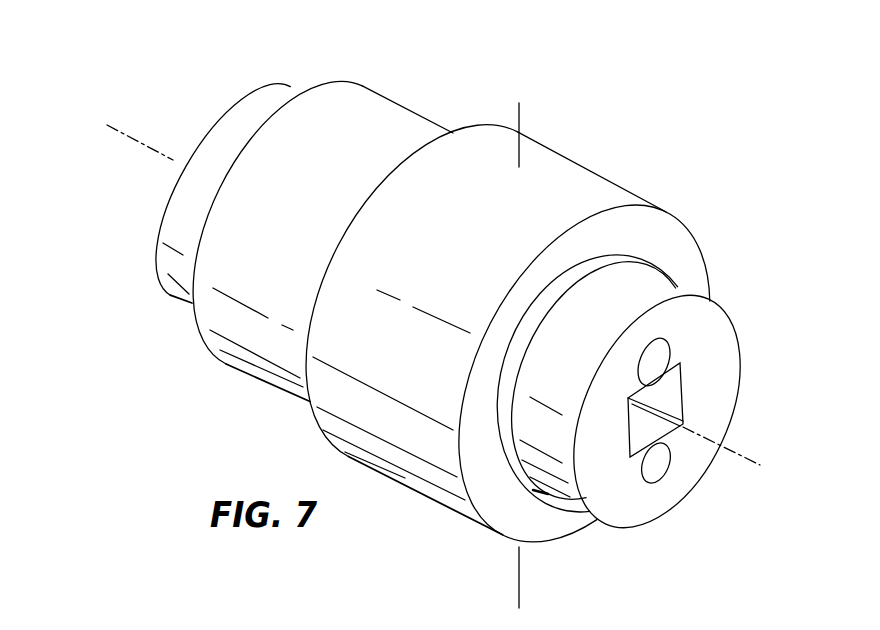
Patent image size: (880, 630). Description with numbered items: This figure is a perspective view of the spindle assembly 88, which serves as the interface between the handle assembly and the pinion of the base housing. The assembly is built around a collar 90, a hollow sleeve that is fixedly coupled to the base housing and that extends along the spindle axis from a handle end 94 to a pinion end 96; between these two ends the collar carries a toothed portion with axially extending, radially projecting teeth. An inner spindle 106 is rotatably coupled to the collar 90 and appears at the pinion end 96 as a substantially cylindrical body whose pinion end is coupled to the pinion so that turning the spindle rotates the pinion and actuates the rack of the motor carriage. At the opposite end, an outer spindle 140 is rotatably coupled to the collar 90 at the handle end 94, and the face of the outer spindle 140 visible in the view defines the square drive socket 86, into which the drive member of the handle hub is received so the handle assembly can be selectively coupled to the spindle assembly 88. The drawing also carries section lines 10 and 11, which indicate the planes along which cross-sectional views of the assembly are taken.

The spindle assembly 88 is at (700, 100).
The inner spindle 106 is at (257, 112).
The pinion end 96 is at (327, 82).
The collar 90 is at (621, 177).
The handle end 94 is at (650, 226).
The outer spindle 140 is at (681, 285).
The square drive socket 86 is at (674, 388).
The section line 10 is at (524, 124).
The section line 11 is at (104, 127).